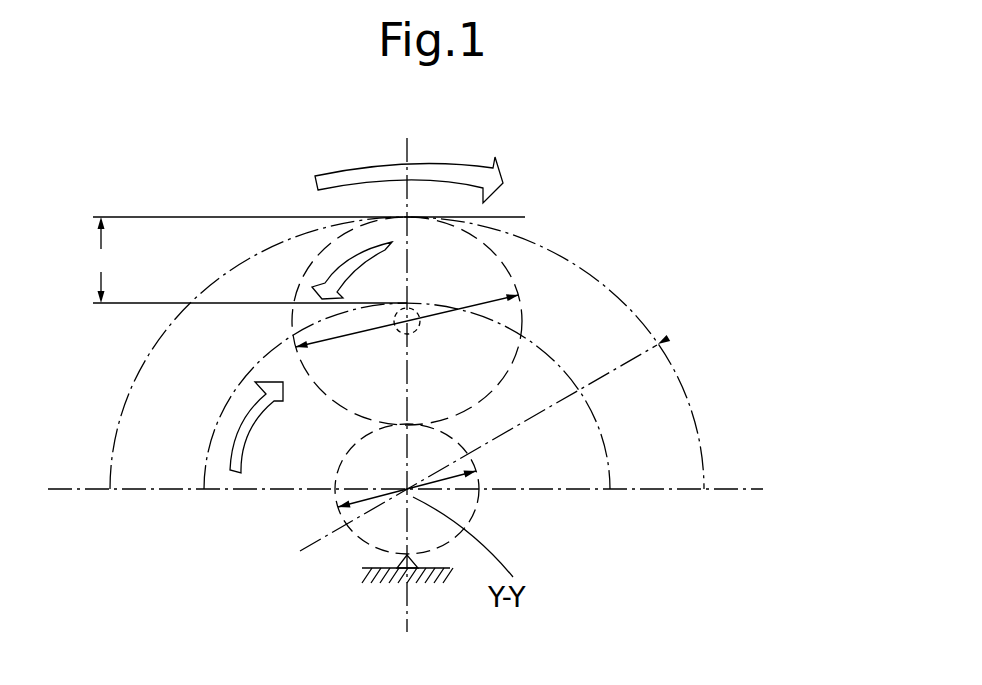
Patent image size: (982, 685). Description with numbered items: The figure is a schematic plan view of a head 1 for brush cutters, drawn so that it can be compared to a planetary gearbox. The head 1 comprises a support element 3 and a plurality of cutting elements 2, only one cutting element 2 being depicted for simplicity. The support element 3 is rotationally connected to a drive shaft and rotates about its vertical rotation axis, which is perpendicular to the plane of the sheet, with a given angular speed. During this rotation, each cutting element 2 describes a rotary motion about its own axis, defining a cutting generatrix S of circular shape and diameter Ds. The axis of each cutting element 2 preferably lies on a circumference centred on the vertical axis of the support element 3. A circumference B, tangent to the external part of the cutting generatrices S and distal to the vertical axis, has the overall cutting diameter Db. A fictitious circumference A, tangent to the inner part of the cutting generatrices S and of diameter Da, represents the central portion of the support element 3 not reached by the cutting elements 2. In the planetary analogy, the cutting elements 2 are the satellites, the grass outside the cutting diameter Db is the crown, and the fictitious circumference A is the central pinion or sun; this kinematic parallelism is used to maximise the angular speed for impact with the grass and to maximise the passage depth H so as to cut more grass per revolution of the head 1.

The head 1 is at (740, 232).
The cutting element 2 is at (475, 277).
The support element 3 is at (592, 481).
The cutting generatrix S is at (477, 277).
The fictitious circumference A is at (477, 505).
The circumference B is at (697, 415).
The passage depth H is at (309, 260).
The diameter of the cutting generatrix Ds is at (518, 295).
The diameter of the fictitious circumference Da is at (476, 471).
The overall cutting diameter Db is at (658, 344).